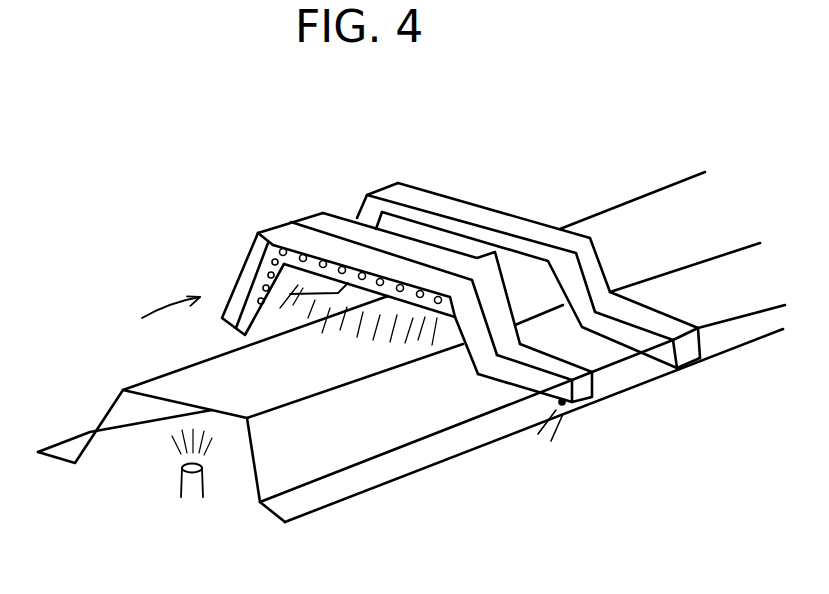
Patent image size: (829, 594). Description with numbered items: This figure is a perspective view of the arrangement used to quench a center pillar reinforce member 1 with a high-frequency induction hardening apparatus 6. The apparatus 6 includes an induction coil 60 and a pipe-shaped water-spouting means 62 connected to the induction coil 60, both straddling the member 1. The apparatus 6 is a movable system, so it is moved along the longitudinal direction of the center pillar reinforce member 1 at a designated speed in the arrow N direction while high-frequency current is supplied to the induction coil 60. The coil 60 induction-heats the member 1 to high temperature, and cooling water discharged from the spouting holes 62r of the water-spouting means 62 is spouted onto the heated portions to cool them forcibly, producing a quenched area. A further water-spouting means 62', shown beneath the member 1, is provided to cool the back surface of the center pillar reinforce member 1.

The center pillar reinforce member 1 is at (357, 504).
The high-frequency induction hardening apparatus 6 is at (466, 269).
The induction coil 60 is at (594, 393).
The water-spouting means 62 is at (571, 448).
The water-spouting means 62' is at (164, 488).
The spouting holes 62r is at (298, 245).
The arrow direction N is at (150, 302).